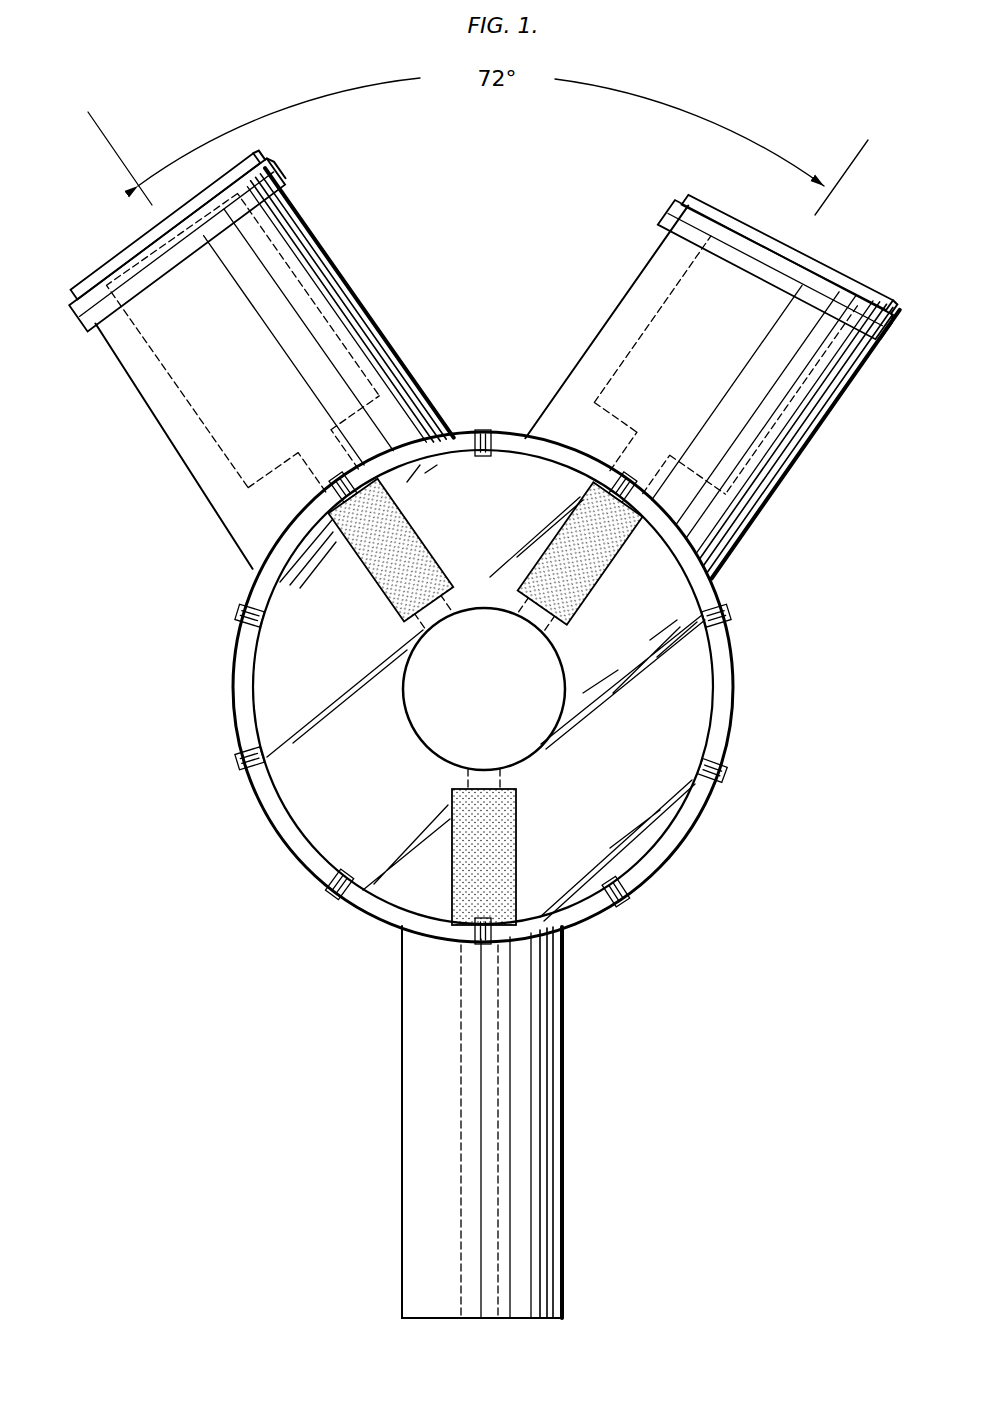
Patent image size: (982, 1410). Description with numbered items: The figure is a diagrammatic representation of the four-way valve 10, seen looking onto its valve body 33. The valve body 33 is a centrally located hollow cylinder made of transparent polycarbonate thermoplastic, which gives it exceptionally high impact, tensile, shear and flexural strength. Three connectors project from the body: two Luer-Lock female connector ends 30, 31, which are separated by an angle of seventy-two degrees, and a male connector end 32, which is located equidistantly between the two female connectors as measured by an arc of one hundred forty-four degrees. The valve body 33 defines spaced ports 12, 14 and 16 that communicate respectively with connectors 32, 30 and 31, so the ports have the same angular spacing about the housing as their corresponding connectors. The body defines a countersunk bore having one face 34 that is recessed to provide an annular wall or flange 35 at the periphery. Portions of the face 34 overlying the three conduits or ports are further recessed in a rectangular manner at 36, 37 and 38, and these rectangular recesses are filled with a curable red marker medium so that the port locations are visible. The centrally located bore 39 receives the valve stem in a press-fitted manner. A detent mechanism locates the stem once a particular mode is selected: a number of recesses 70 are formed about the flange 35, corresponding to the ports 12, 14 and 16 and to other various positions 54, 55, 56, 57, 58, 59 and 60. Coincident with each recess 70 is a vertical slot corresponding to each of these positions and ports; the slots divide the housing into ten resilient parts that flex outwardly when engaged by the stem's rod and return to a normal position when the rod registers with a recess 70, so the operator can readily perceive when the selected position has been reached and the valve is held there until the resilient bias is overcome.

The valve 10 is at (735, 860).
The port 12 is at (515, 932).
The port 14 is at (614, 478).
The port 16 is at (330, 504).
The Luer-Lock female connector end 30 is at (504, 289).
The Luer-Lock female connector end 31 is at (231, 420).
The male connector end 32 is at (692, 1168).
The valve body 33 is at (732, 746).
The face 34 is at (611, 778).
The annular wall or flange 35 is at (270, 810).
The rectangular recess 36 is at (379, 592).
The rectangular recess 37 is at (605, 594).
The rectangular recess 38 is at (452, 834).
The bore 39 is at (496, 698).
The position 54 is at (712, 778).
The position 55 is at (250, 762).
The position 56 is at (622, 892).
The position 57 is at (337, 895).
The position 58 is at (712, 620).
The position 59 is at (250, 618).
The position 60 is at (490, 456).
The recess 70 is at (498, 675).